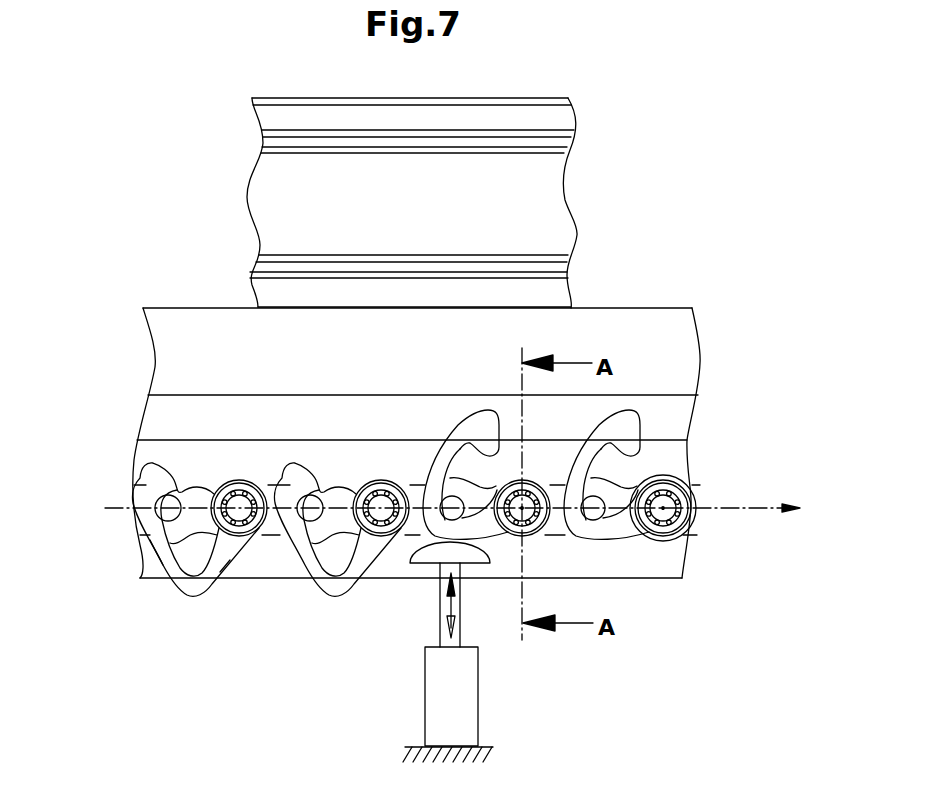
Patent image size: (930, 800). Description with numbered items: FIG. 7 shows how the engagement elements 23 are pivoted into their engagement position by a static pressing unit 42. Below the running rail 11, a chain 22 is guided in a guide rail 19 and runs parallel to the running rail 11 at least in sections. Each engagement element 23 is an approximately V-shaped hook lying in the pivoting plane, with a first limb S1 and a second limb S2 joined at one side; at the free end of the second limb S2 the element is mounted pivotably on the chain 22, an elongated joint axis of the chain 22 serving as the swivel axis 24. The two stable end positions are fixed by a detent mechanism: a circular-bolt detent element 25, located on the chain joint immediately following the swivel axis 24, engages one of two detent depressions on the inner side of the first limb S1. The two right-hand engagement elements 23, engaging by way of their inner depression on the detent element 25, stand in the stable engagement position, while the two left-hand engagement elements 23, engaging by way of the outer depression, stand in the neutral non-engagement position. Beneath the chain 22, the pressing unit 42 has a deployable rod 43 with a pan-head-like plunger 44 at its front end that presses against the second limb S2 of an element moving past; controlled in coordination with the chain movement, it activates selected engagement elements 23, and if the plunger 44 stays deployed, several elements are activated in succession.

The running rail 11 is at (590, 95).
The guide rail 19 is at (677, 420).
The chain 22 is at (202, 498).
The engagement element 23 is at (188, 587).
The swivel axis 24 is at (692, 522).
The detent element 25 is at (168, 508).
The pressing unit 42 is at (487, 702).
The rod 43 is at (442, 603).
The plunger 44 is at (428, 557).
The first limb S1 is at (160, 557).
The second limb S2 is at (217, 560).